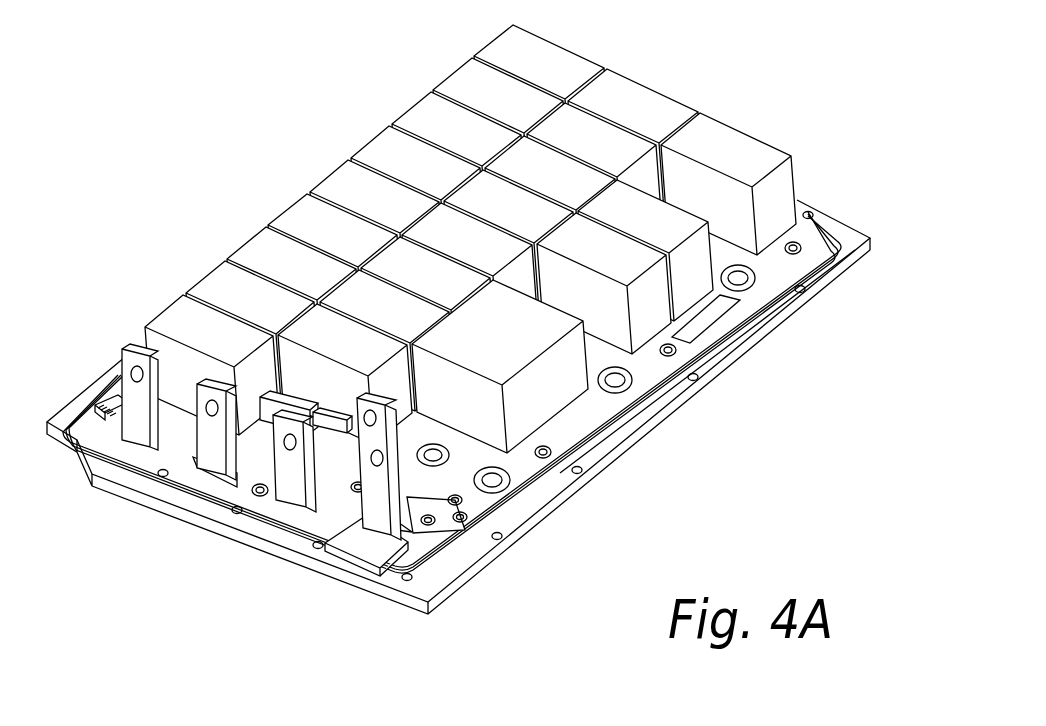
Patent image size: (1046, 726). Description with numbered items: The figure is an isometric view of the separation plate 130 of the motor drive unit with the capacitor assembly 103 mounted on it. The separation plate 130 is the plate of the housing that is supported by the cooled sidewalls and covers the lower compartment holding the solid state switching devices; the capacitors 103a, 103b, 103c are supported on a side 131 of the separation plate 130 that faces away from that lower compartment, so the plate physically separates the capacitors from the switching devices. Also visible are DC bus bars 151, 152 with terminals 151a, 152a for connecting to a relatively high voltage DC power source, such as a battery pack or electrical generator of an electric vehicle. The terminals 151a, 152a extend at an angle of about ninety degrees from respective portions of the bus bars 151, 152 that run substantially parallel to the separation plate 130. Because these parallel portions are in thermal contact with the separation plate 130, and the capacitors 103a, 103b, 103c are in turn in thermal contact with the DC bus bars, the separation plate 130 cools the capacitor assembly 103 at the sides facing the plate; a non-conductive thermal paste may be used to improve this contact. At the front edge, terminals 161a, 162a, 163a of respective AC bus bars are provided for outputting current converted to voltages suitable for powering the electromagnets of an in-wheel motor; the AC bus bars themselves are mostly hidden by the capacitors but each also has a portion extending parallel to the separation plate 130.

The capacitor assembly 103 is at (498, 229).
The capacitor 103a is at (777, 150).
The capacitor 103b is at (665, 97).
The capacitor 103c is at (577, 56).
The separation plate 130 is at (459, 431).
The side of the separation plate 131 is at (420, 567).
The DC bus bar 151 is at (622, 395).
The terminal 151a is at (388, 462).
The DC bus bar 152 is at (433, 458).
The terminal 152a is at (357, 430).
The terminal of AC bus bar 161a is at (143, 398).
The terminal of AC bus bar 162a is at (213, 435).
The terminal of AC bus bar 163a is at (297, 470).